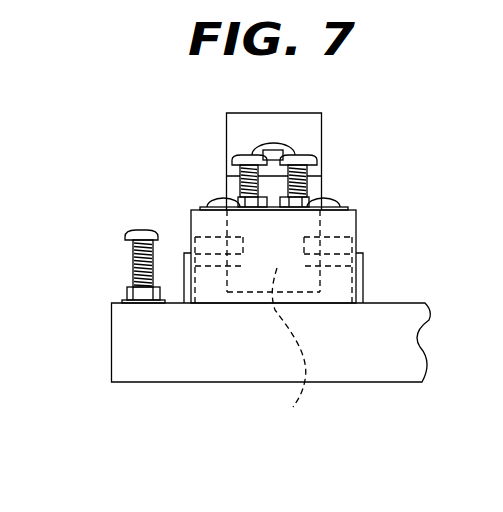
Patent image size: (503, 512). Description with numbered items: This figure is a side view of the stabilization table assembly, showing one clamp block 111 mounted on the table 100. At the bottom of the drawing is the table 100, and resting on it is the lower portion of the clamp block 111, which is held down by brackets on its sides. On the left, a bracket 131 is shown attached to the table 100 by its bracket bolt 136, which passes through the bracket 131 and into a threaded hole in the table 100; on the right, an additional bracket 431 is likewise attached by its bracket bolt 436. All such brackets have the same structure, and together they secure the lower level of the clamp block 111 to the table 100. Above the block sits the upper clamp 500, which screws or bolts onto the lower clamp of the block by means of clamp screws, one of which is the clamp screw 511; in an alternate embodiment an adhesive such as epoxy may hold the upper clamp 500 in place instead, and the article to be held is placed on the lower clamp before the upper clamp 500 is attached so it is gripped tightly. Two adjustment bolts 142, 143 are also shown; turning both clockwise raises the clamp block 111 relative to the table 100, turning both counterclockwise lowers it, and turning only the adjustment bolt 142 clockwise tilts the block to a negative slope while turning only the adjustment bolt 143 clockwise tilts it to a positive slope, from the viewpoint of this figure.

The table 100 is at (165, 370).
The clamp block 111 is at (292, 359).
The bracket 131 is at (183, 275).
The bracket bolt 136 is at (190, 243).
The adjustment bolt 142 is at (255, 155).
The adjustment bolt 143 is at (310, 162).
The bracket 431 is at (363, 253).
The bracket bolt 436 is at (357, 243).
The upper clamp 500 is at (310, 133).
The clamp screw 511 is at (277, 143).